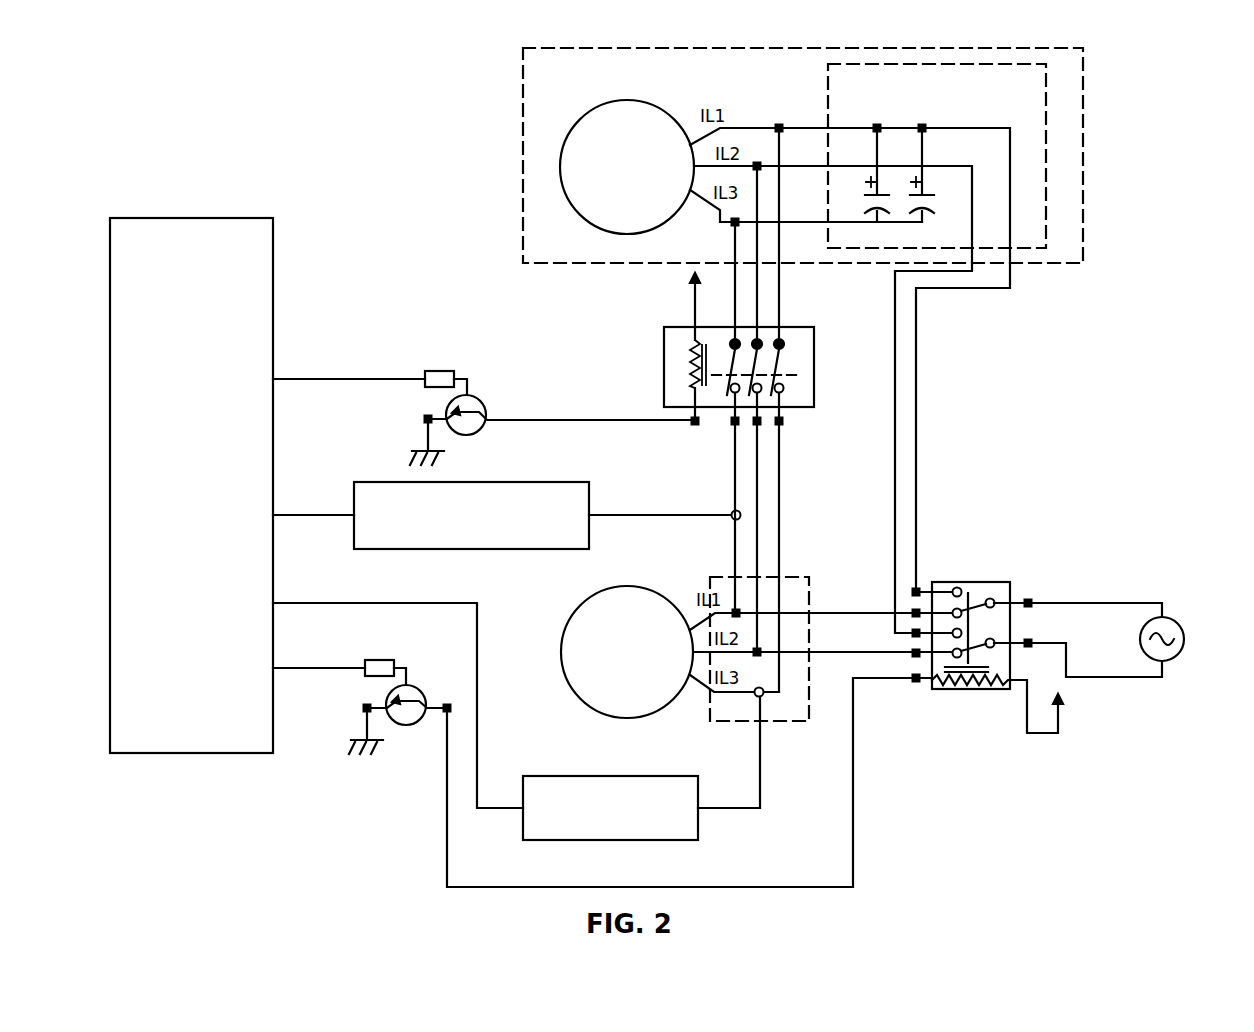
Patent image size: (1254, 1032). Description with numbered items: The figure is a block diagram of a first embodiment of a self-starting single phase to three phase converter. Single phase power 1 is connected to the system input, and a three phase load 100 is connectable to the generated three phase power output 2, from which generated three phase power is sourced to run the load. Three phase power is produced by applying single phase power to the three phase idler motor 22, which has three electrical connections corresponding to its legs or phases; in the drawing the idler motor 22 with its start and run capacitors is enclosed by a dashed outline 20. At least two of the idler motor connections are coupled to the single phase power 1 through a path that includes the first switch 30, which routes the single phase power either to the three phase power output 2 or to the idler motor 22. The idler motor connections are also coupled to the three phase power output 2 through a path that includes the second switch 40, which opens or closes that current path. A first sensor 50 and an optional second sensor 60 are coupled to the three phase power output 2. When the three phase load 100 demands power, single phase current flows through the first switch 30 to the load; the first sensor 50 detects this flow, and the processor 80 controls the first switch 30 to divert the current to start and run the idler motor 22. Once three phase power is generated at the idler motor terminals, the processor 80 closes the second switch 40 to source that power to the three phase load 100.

The single phase power 1 is at (1184, 640).
The generated three phase power output 2 is at (790, 577).
The idler motor assembly 20 is at (1028, 48).
The three phase idler motor 22 is at (629, 98).
The first switch 30 is at (980, 582).
The second switch 40 is at (805, 327).
The first sensor 50 is at (565, 776).
The second sensor 60 is at (400, 480).
The processor 80 is at (165, 218).
The three phase load 100 is at (626, 586).